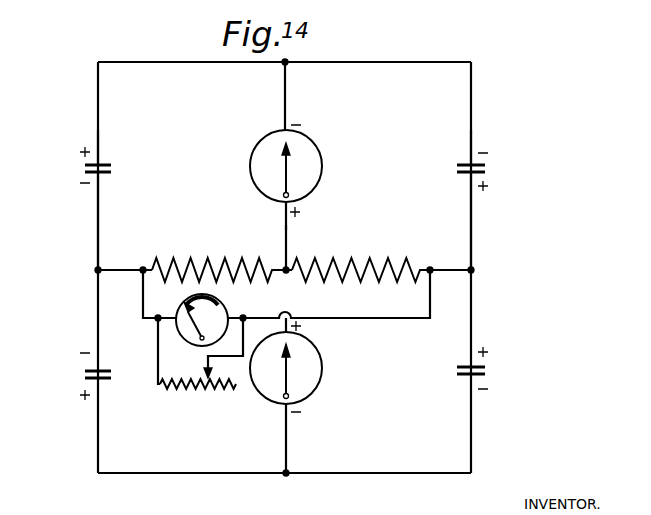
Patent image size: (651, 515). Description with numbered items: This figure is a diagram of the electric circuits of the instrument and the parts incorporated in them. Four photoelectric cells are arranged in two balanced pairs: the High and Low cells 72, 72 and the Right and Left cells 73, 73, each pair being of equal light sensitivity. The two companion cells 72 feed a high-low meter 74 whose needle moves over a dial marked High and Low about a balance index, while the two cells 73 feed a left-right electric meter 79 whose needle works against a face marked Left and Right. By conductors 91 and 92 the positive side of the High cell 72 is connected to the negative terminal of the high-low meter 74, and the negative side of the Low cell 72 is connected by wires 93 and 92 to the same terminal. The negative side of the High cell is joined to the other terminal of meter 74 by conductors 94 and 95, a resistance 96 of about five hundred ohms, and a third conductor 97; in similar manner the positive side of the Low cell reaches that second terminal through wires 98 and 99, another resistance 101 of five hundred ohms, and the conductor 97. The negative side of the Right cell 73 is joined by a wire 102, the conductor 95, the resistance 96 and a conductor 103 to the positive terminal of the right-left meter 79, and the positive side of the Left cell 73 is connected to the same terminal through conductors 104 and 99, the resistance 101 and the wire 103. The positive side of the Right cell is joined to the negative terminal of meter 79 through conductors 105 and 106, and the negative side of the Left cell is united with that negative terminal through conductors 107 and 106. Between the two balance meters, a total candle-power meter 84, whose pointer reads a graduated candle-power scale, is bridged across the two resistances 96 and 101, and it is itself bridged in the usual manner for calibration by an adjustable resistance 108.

The photoelectric-cell 72 is at (110, 166).
The photoelectric-cell 73 is at (110, 371).
The high-low meter 74 is at (250, 178).
The left-right electric-meter 79 is at (322, 376).
The candle-power electric-meter 84 is at (190, 340).
The conductor 91 is at (97, 98).
The conductor 92 is at (284, 99).
The wire 93 is at (470, 98).
The conductor 94 is at (97, 228).
The conductor 95 is at (114, 270).
The resistance 96 is at (203, 258).
The conductor 97 is at (287, 231).
The wire 98 is at (472, 230).
The wire 99 is at (443, 268).
The resistance 101 is at (378, 263).
The wire 102 is at (97, 316).
The conductor 103 is at (287, 302).
The conductor 104 is at (472, 302).
The conductor 105 is at (216, 475).
The conductor 106 is at (285, 437).
The conductor 107 is at (414, 472).
The adjustable resistance 108 is at (184, 394).